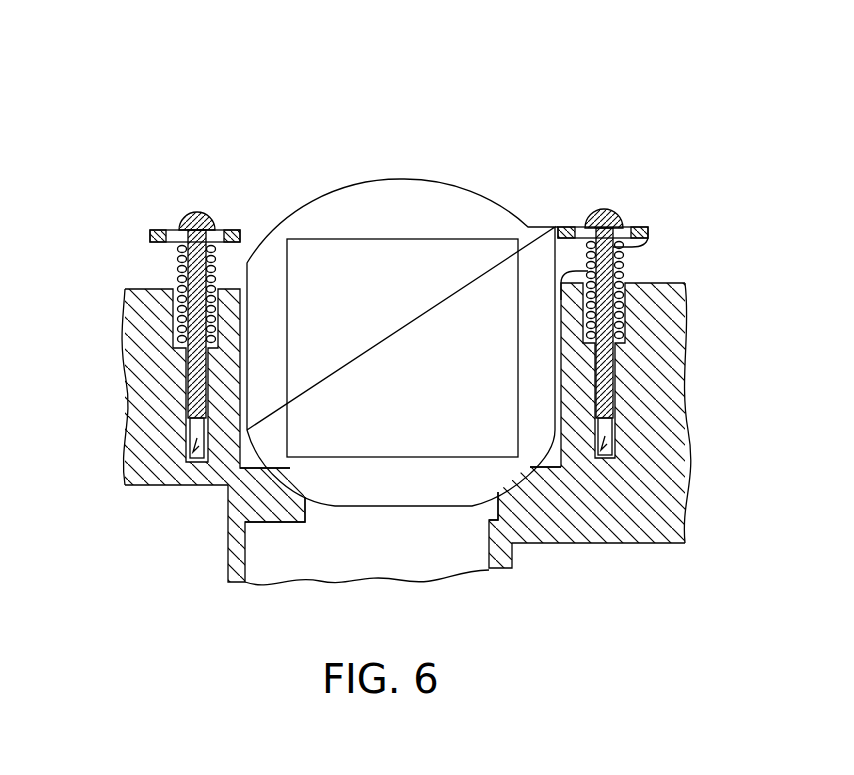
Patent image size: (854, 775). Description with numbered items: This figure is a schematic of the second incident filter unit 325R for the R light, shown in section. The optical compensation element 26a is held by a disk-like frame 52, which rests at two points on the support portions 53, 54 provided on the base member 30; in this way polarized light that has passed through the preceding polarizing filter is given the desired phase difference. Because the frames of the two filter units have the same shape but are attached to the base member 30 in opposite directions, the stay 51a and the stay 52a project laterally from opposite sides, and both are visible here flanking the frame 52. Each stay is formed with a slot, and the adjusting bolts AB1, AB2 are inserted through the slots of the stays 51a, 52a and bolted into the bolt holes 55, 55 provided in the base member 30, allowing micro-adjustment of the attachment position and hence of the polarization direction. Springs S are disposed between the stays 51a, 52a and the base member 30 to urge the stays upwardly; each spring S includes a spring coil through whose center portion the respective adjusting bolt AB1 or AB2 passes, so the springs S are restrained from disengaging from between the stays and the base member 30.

The second incident filter unit 325R is at (325, 142).
The frame 52 is at (408, 190).
The optical compensation element 26a is at (332, 262).
The stay 51a is at (156, 236).
The adjusting bolt AB1 is at (197, 212).
The adjusting bolt AB2 is at (604, 210).
The spring S is at (176, 268).
The base member 30 is at (145, 398).
The bolt hole 55 is at (197, 460).
The stay 52a is at (646, 232).
The support portion 53 is at (300, 482).
The support portion 54 is at (525, 490).